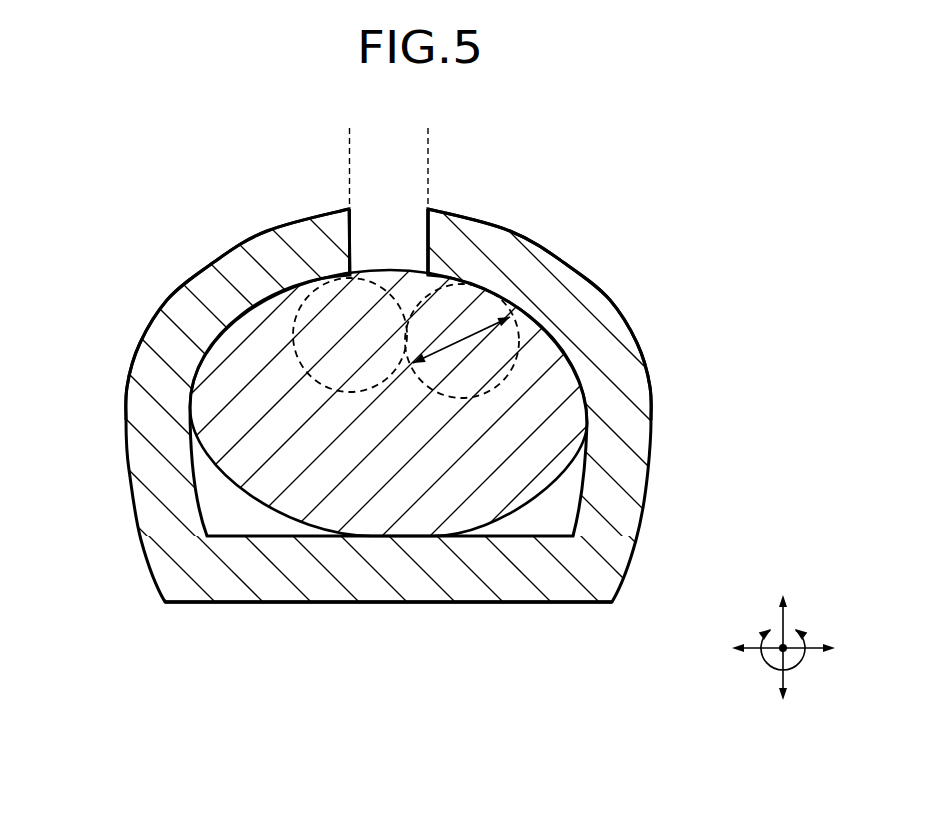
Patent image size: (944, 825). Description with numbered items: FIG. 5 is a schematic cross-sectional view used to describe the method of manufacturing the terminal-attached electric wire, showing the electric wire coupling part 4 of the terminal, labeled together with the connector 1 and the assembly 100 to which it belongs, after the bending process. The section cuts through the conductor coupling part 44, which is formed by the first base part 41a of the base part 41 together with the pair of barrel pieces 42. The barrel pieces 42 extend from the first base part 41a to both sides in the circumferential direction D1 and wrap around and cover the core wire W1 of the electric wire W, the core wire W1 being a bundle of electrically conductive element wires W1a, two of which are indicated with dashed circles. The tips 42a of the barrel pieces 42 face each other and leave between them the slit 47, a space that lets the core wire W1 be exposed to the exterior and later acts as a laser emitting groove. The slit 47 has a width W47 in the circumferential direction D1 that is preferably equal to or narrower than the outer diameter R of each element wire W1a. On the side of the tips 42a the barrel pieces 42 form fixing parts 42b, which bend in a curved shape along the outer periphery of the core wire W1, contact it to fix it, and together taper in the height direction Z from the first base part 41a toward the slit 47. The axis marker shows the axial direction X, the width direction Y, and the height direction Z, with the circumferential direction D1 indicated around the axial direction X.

The electric wire coupling part 4 is at (162, 208).
The connector 1 is at (472, 377).
The connector assembly 100 is at (472, 377).
The conductor coupling part 44 is at (100, 303).
The barrel pieces 42 is at (132, 437).
The tips 42a is at (353, 240).
The fixing parts 42b is at (270, 252).
The slit 47 is at (393, 205).
The width of the slit W47 is at (423, 146).
The core wire W1 is at (542, 499).
The wire W is at (424, 400).
The element wires W1a is at (293, 354).
The outer diameter of each element wire R is at (467, 343).
The base part 41 is at (327, 632).
The first base part 41a is at (398, 602).
The height direction Z is at (785, 618).
The axial direction X is at (797, 643).
The width direction Y is at (797, 655).
The circumferential direction D1 is at (772, 668).